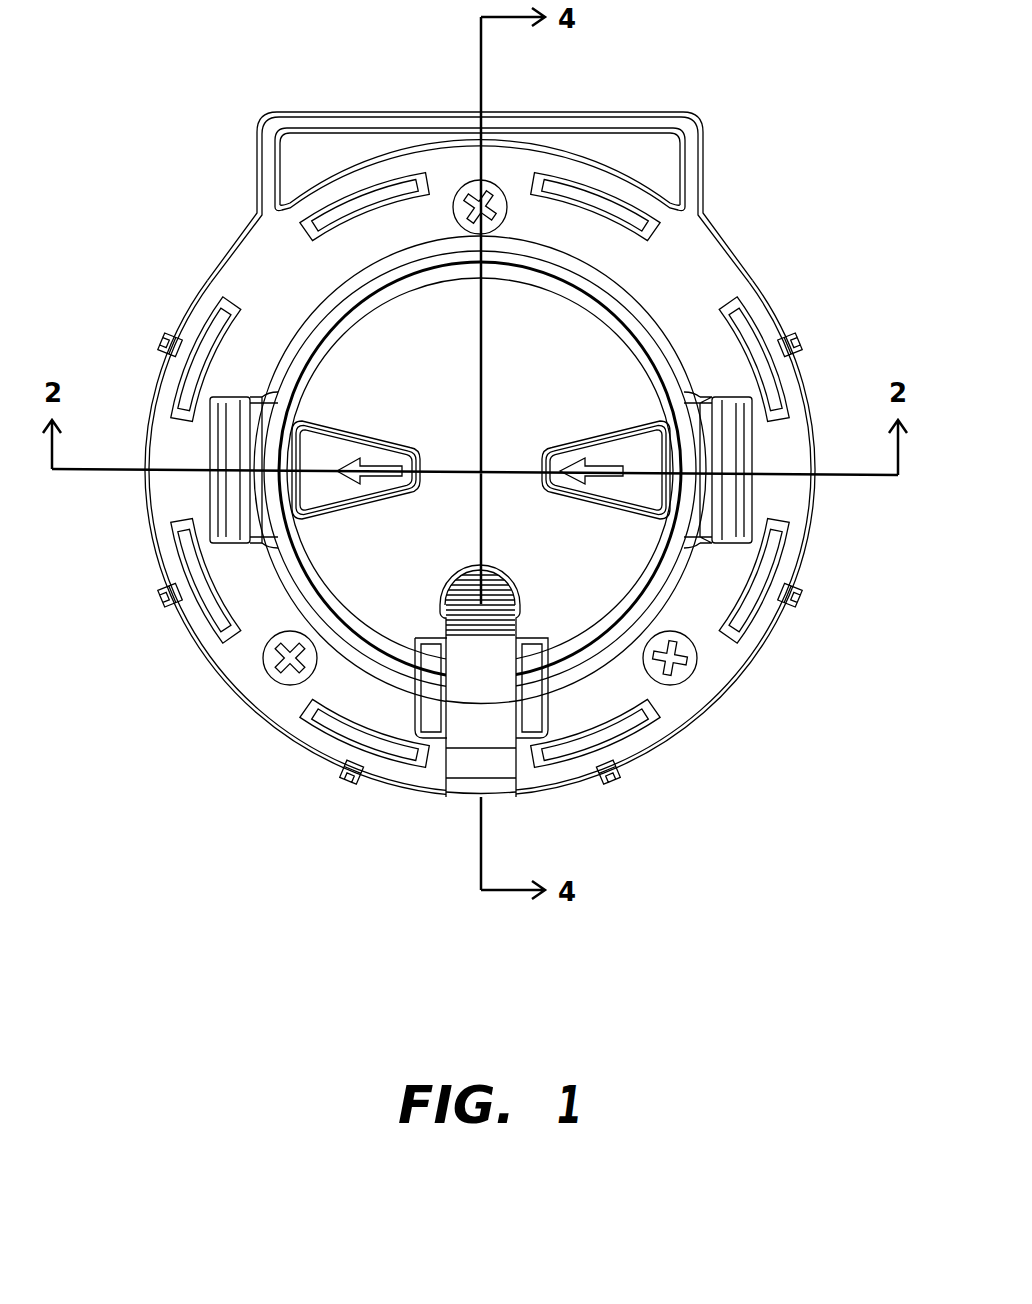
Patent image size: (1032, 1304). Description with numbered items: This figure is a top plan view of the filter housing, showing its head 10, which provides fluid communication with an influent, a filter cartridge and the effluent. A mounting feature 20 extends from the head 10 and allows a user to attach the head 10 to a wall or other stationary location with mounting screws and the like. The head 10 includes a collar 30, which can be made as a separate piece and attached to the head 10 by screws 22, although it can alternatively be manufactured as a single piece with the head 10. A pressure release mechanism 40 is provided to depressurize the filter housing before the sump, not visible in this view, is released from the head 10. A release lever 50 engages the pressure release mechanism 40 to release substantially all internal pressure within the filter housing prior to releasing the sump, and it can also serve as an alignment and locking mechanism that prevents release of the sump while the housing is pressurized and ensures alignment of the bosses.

The head 10 is at (172, 176).
The mounting feature 20 is at (370, 123).
The collar 30 is at (245, 281).
The screws 22 is at (263, 658).
The pressure release mechanism 40 is at (548, 588).
The release lever 50 is at (455, 682).